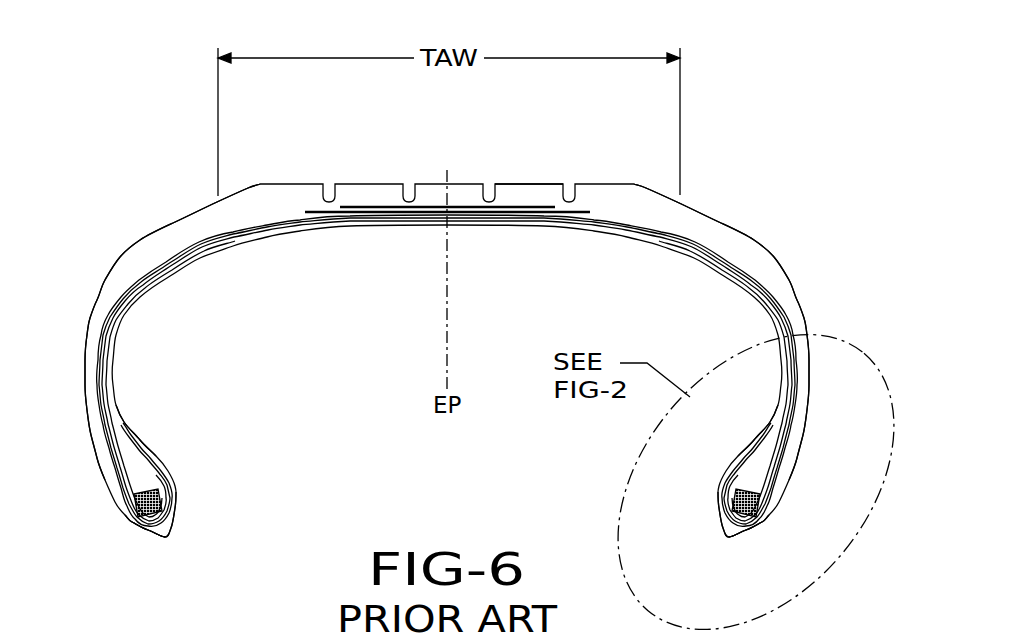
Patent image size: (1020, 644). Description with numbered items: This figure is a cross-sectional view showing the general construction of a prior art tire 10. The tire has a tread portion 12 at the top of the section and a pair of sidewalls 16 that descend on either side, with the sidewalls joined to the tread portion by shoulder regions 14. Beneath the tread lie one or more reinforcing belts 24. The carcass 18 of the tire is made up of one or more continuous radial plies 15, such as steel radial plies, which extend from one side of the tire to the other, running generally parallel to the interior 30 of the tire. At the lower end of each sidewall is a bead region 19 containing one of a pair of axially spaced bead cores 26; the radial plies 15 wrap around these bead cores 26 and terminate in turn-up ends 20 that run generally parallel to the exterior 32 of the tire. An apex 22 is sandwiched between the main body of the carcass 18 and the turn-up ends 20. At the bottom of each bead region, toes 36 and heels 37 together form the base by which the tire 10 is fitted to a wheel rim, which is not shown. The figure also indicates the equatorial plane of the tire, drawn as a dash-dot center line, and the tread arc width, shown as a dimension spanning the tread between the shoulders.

The tire 10 is at (158, 96).
The tread portion 12 is at (416, 178).
The shoulder regions 14 is at (172, 226).
The radial plies 15 is at (118, 408).
The sidewalls 16 is at (87, 307).
The carcass 18 is at (164, 273).
The bead regions 19 is at (180, 540).
The turn-up ends 20 is at (113, 456).
The apex 22 is at (120, 440).
The reinforcing belts 24 is at (587, 205).
The bead cores 26 is at (148, 493).
The interior 30 is at (378, 258).
The exterior 32 is at (520, 170).
The toes 36 is at (152, 540).
The heels 37 is at (127, 517).